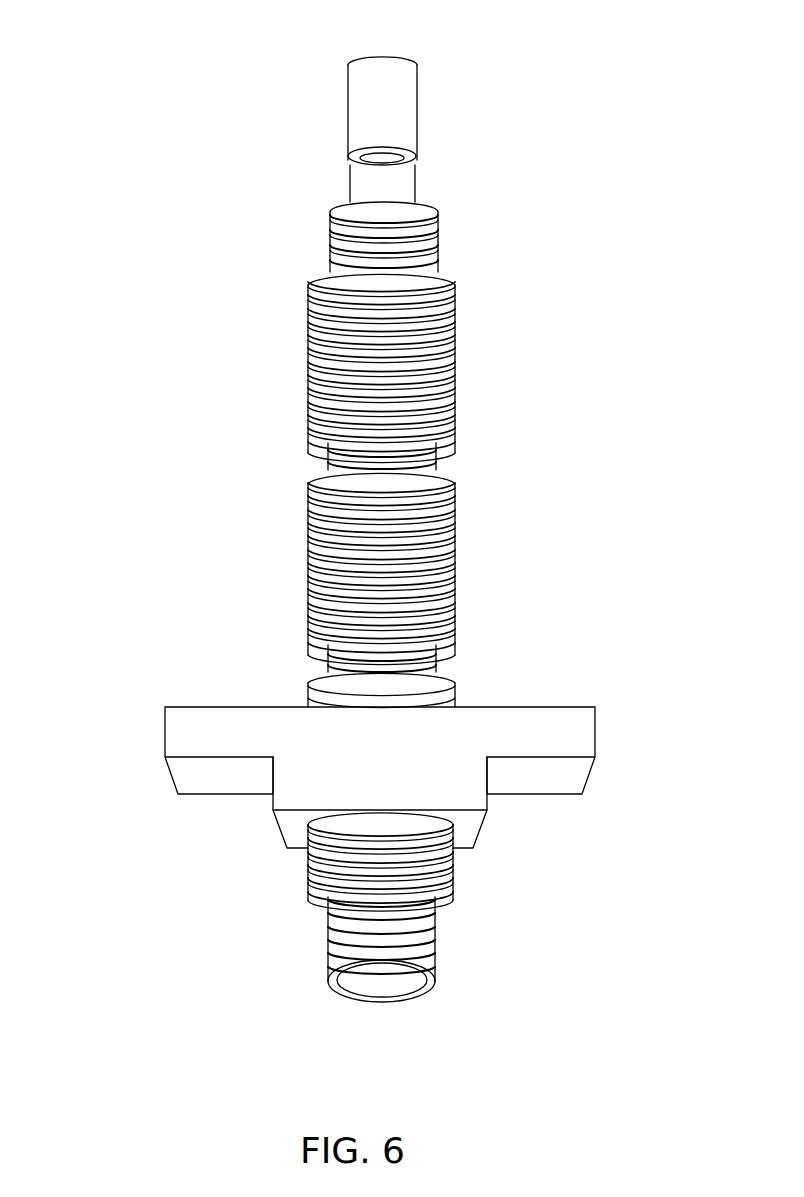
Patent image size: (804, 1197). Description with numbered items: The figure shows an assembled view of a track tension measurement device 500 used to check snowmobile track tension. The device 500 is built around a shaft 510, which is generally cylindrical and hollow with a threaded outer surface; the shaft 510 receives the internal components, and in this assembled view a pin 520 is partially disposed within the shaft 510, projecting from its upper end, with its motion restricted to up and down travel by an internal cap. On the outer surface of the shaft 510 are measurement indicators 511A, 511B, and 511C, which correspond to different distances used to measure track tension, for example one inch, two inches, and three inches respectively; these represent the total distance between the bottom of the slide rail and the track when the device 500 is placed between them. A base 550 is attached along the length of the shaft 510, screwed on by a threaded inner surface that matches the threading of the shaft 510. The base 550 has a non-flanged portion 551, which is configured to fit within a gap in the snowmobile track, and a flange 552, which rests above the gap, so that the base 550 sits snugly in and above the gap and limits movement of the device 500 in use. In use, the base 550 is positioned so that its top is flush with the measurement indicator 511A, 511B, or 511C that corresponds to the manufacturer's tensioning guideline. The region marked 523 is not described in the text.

The device 500 is at (76, 85).
The shaft 510 is at (456, 546).
The measurement indicator 511A is at (327, 247).
The measurement indicator 511B is at (327, 461).
The measurement indicator 511C is at (324, 664).
The pin 520 is at (351, 187).
The head 523 is at (430, 162).
The base 550 is at (326, 879).
The non-flanged portion 551 is at (273, 774).
The flange 552 is at (162, 736).